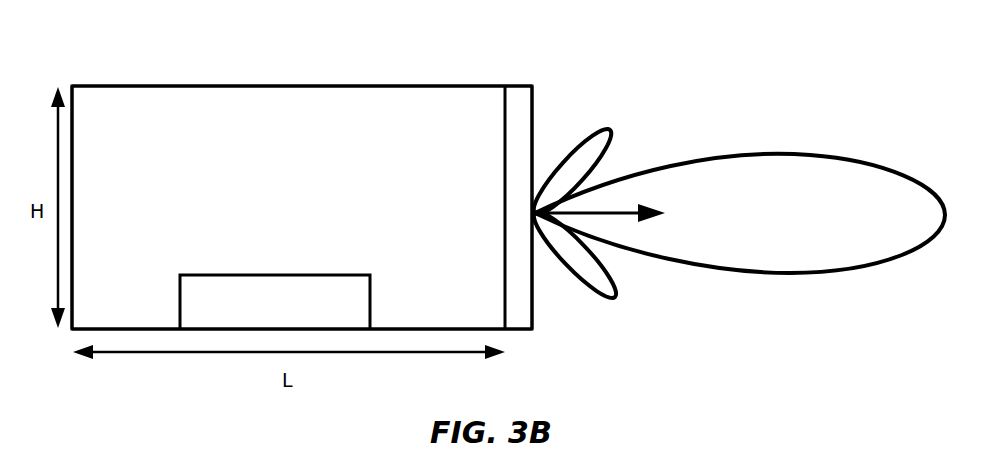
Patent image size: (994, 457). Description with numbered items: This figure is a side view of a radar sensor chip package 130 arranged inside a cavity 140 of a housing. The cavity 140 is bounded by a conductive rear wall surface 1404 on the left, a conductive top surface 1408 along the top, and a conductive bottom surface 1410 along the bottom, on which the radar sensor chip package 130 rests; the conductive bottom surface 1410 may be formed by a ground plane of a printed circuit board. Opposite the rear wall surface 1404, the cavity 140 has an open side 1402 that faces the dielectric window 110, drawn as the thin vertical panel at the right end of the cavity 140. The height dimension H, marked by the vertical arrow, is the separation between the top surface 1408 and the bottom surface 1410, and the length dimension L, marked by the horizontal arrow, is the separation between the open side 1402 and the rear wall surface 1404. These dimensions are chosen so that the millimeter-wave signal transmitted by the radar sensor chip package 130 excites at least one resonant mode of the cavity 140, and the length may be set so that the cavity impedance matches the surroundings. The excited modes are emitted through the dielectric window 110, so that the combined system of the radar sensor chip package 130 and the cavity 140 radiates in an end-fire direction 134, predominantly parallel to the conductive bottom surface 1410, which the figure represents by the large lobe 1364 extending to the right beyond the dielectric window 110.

The cavity 140 is at (113, 128).
The conductive top surface 1408 is at (183, 87).
The conductive rear wall surface 1404 is at (73, 208).
The conductive bottom surface 1410 is at (128, 327).
The radar sensor chip package 130 is at (345, 300).
The dielectric window 110 is at (513, 132).
The open side 1402 is at (735, 203).
The lobe 1364 is at (750, 190).
The end-fire direction 134 is at (653, 220).